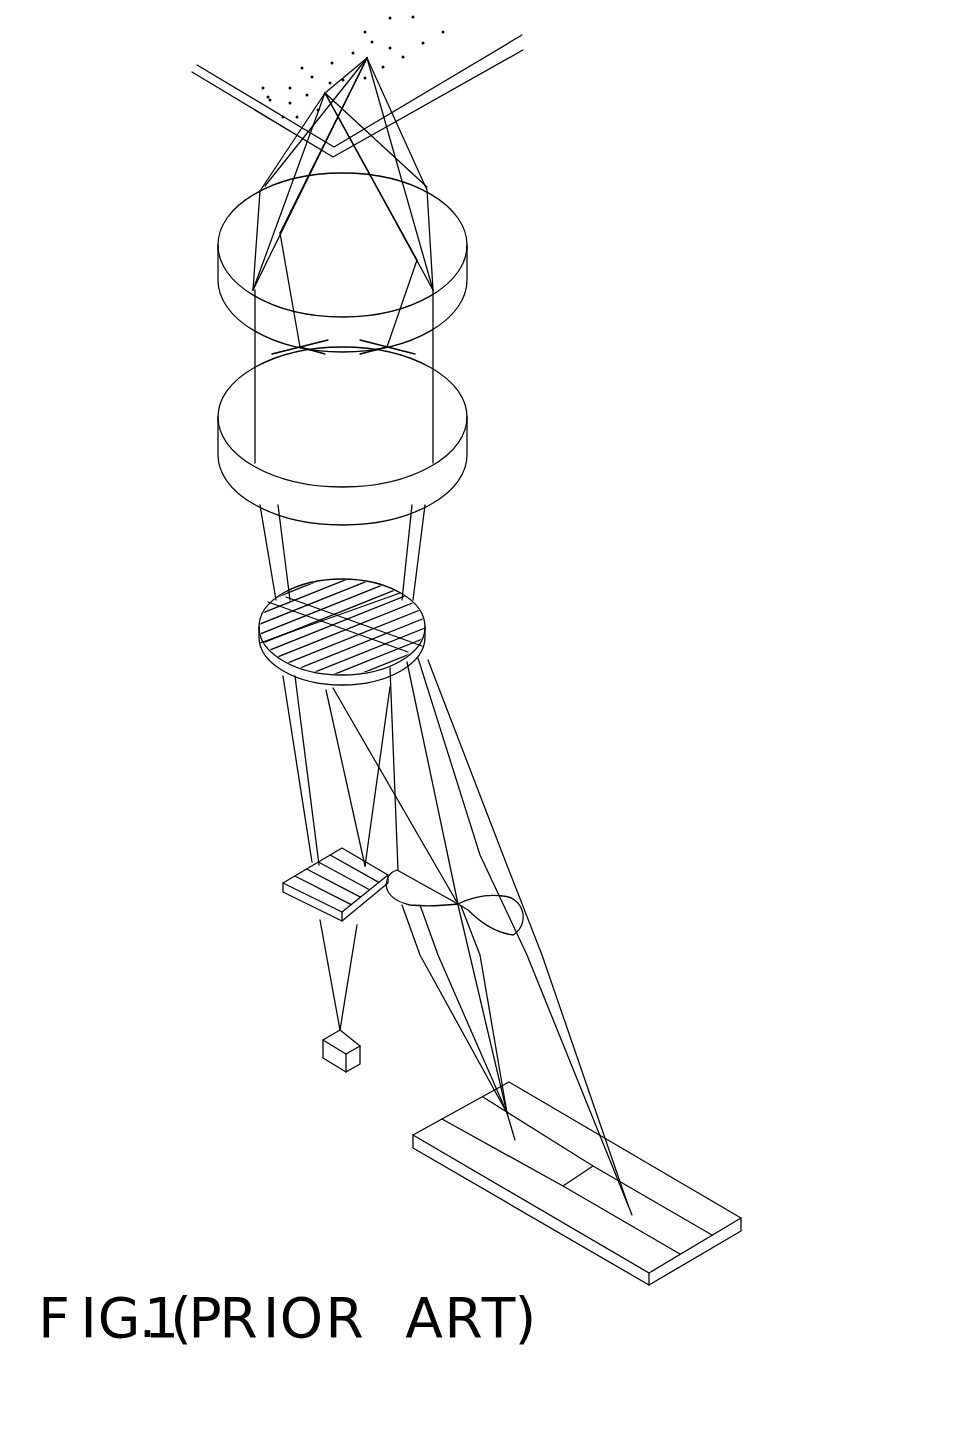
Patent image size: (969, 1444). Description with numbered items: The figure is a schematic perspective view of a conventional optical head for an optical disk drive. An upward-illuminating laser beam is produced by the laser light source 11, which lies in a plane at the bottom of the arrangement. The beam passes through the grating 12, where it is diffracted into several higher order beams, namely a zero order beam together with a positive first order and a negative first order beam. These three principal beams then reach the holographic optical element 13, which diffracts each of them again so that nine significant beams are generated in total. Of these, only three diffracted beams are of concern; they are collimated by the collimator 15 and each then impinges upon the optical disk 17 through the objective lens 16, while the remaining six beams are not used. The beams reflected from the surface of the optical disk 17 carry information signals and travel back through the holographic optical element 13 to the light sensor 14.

The laser light source 11 is at (323, 1043).
The grating 12 is at (283, 881).
The holographic optical element 13 is at (427, 630).
The light sensor 14 is at (653, 1133).
The collimator 15 is at (467, 440).
The objective lens 16 is at (467, 263).
The optical disk 17 is at (493, 63).